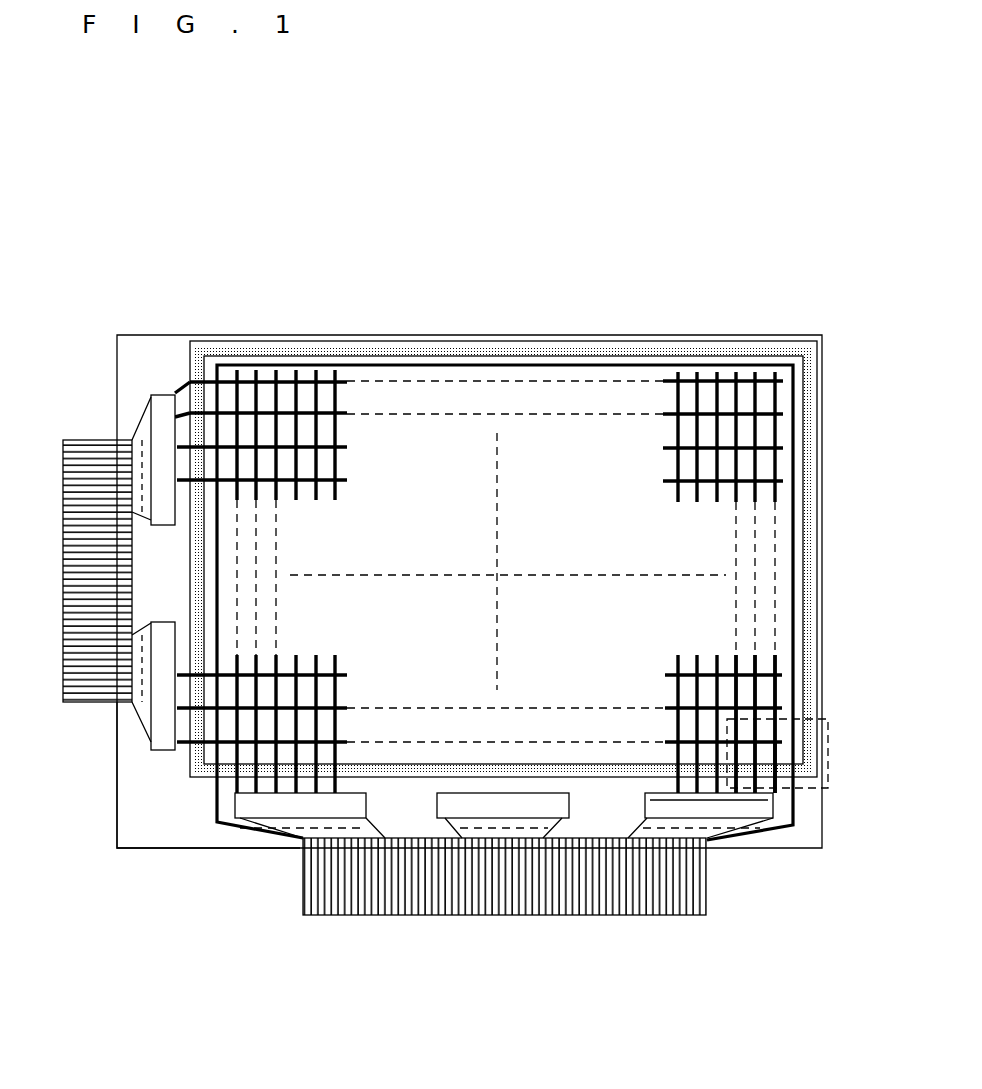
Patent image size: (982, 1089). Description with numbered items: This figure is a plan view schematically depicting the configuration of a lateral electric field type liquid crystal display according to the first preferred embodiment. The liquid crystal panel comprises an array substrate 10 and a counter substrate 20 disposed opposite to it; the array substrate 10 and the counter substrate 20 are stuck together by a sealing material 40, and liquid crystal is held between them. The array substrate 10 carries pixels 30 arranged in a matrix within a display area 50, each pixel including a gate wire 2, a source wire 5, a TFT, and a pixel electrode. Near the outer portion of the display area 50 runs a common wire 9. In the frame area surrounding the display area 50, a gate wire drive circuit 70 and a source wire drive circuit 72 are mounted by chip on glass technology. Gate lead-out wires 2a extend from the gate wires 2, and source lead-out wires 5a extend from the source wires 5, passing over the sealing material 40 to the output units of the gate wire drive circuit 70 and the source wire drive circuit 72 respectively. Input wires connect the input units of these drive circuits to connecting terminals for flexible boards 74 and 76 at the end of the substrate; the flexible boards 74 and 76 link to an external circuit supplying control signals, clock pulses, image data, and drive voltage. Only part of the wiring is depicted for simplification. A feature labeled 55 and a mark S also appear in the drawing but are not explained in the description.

The gate wire 2 is at (267, 377).
The gate lead-out wire 2a is at (211, 380).
The pixel 30 is at (323, 390).
The display area 50 is at (541, 444).
The sealing material 40 is at (808, 520).
The counter substrate 20 is at (810, 787).
The array substrate 10 is at (808, 850).
The peripheral region 55 is at (150, 790).
The gate wire drive circuit 70 is at (160, 442).
The flexible board 74 is at (67, 533).
The flexible board 76 is at (503, 905).
The source wire drive circuit 72 is at (727, 810).
The common wire 9 is at (238, 832).
The source wire 5 is at (773, 693).
The source lead-out wire 5a is at (773, 760).
The region S is at (830, 737).